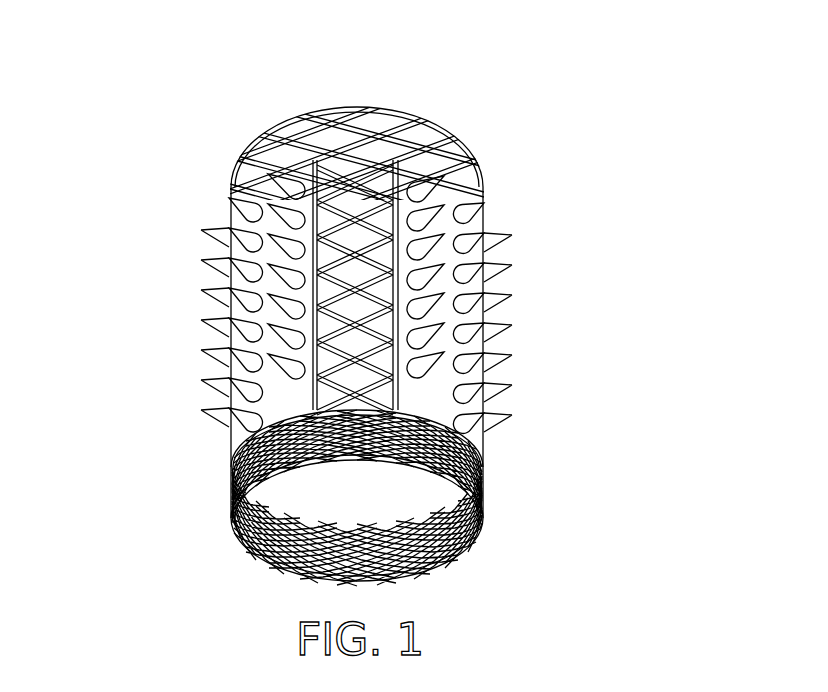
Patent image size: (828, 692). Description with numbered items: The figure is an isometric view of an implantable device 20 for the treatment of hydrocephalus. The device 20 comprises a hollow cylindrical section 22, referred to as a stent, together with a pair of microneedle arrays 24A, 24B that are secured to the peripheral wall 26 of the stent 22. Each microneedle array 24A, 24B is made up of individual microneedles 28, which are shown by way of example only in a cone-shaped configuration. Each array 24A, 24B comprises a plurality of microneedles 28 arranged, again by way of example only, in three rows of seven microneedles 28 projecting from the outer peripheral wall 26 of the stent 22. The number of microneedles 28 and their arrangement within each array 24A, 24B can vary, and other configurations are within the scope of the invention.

The implantable device 20 is at (460, 96).
The hollow cylindrical section 22 is at (358, 106).
The peripheral wall 26 is at (468, 150).
The microneedle array 24A is at (176, 328).
The microneedle array 24B is at (532, 316).
The microneedles 28 is at (213, 404).